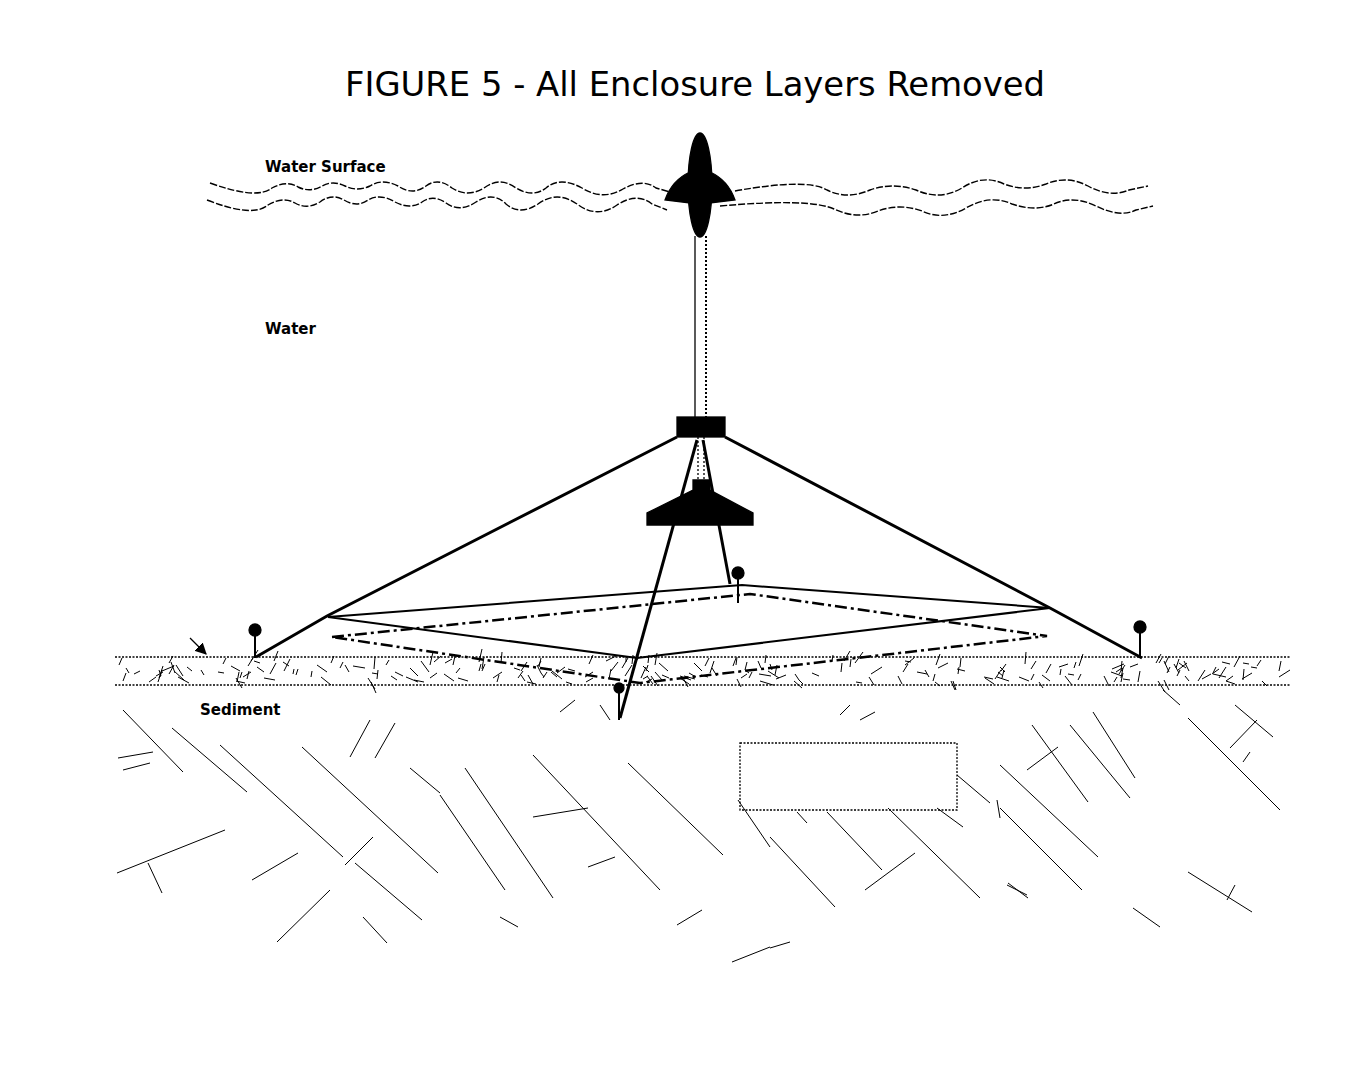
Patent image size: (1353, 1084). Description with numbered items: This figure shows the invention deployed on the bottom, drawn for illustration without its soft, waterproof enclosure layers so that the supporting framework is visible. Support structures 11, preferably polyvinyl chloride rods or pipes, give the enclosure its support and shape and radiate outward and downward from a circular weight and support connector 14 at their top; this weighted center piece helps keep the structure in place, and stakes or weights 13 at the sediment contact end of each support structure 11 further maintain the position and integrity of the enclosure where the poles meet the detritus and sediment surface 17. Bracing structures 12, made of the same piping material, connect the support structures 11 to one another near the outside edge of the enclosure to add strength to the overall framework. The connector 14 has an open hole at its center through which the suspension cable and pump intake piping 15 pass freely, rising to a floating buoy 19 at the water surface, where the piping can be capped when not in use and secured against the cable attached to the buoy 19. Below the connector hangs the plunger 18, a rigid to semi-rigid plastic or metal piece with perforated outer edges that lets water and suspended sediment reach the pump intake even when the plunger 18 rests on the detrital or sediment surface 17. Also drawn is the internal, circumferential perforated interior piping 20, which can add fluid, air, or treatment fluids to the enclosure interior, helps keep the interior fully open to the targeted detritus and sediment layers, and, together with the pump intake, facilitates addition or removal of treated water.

The support structures 11 is at (670, 554).
The bracing structures 12 is at (865, 628).
The stakes or weights 13 is at (1180, 625).
The circular weight and support connector 14 is at (730, 423).
The suspension cable and pump intake piping 15 is at (715, 338).
The detritus and sediment surface 17 is at (702, 639).
The plunger 18 is at (692, 498).
The floating buoy 19 is at (716, 157).
The perforated interior piping 20 is at (704, 678).